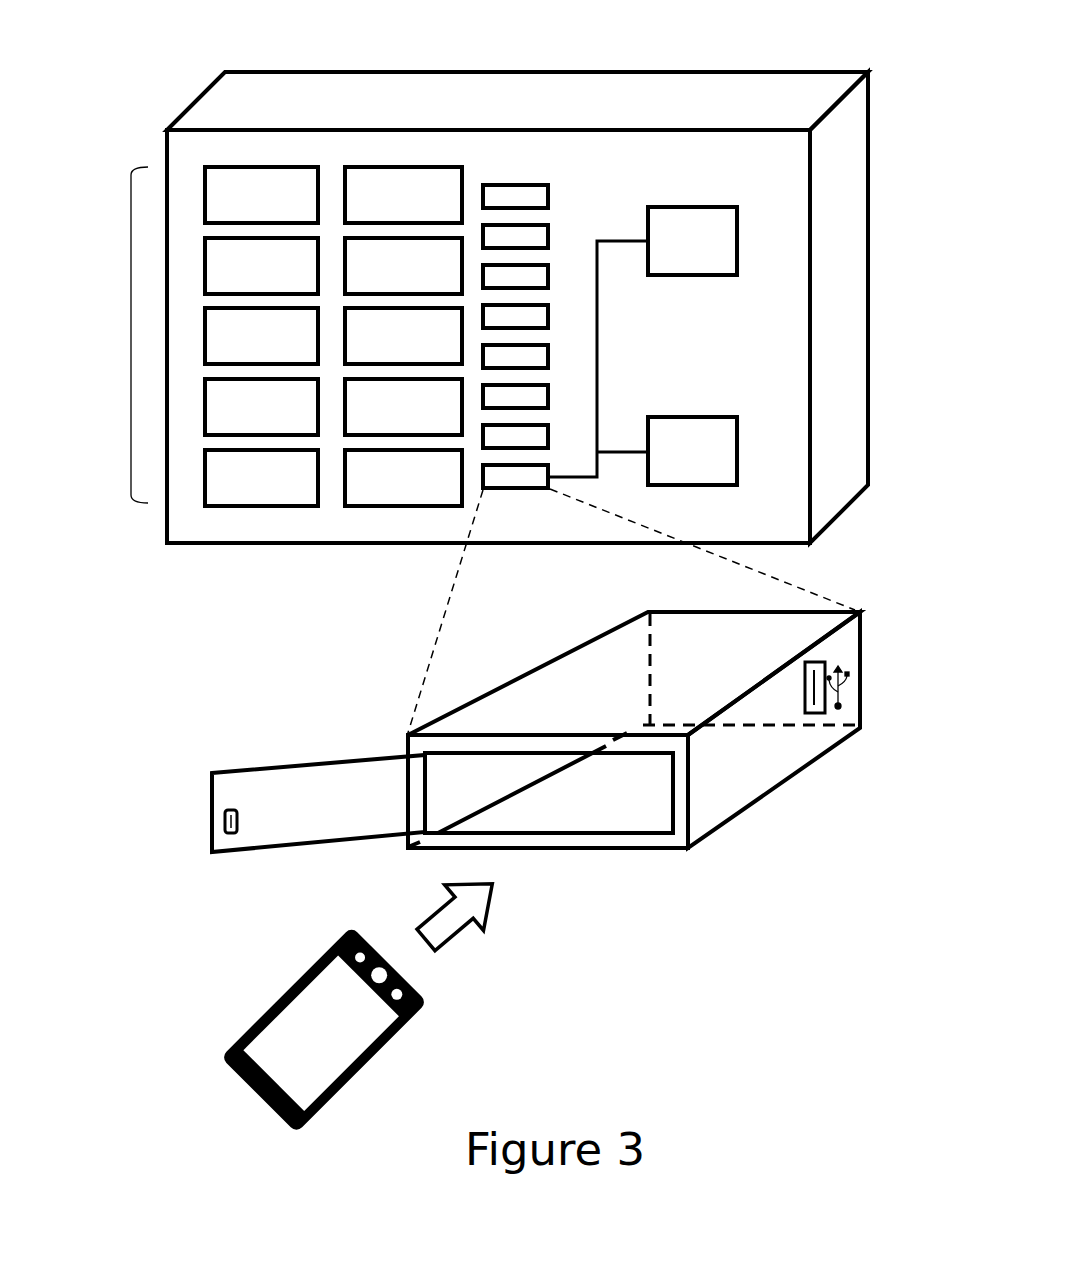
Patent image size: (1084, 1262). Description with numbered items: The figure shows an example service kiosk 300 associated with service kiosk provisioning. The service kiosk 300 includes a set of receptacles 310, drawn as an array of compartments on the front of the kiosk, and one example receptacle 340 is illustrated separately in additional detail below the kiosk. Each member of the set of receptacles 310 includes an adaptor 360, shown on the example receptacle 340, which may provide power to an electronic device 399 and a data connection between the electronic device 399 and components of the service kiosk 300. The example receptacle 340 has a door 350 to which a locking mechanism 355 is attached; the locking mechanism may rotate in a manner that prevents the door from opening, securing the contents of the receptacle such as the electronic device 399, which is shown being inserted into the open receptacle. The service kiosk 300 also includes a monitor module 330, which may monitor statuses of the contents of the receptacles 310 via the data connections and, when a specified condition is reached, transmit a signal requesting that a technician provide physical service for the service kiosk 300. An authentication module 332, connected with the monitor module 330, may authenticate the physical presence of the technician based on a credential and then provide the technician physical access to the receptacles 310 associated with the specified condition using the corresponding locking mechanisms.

The service kiosk 300 is at (648, 70).
The set of receptacles 310 is at (131, 330).
The monitor module 330 is at (722, 469).
The authentication module 332 is at (722, 259).
The example receptacle 340 is at (622, 850).
The door 350 is at (322, 760).
The locking mechanism 355 is at (223, 825).
The adaptor 360 is at (815, 660).
The electronic device 399 is at (427, 1004).